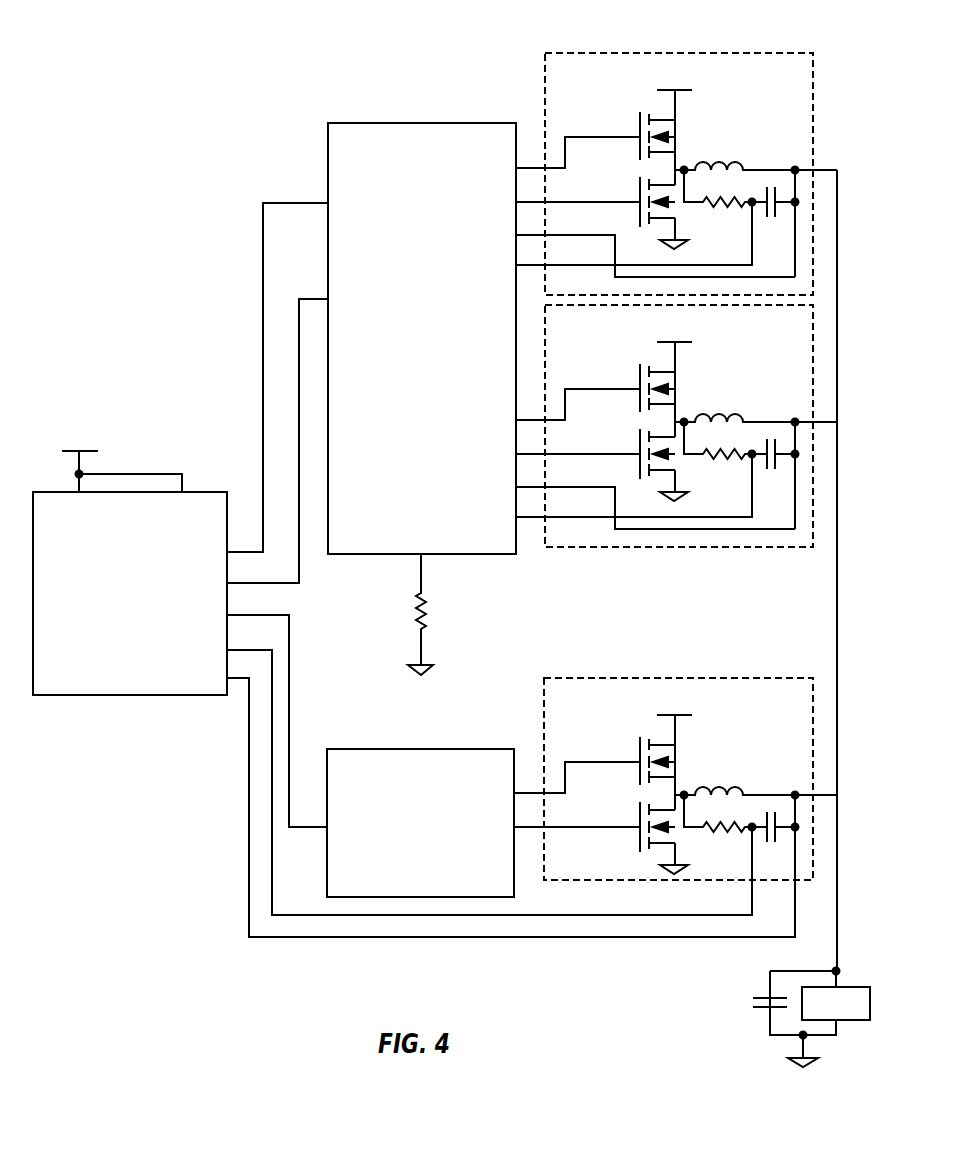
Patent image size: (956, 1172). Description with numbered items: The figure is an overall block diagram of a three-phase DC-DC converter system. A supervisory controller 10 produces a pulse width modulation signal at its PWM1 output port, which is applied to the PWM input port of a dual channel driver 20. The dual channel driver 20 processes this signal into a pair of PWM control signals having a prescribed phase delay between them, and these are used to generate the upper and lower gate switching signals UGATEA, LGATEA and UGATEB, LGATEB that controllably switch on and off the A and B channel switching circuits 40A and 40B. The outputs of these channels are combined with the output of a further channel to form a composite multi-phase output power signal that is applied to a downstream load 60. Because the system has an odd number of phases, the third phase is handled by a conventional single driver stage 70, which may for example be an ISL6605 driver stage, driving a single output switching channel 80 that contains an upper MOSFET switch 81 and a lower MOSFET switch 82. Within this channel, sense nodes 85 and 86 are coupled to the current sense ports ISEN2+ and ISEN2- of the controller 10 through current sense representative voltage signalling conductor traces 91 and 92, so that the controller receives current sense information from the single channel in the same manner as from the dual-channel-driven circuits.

The supervisory controller 10 is at (106, 695).
The dual channel driver 20 is at (400, 123).
The A channel switching circuit 40A is at (747, 52).
The B channel switching circuit 40B is at (662, 546).
The load 60 is at (855, 987).
The single driver stage 70 is at (390, 749).
The single output switching channel 80 is at (675, 755).
The upper MOSFET switch 81 is at (672, 752).
The lower MOSFET switch 82 is at (638, 817).
The sense node 85 is at (795, 790).
The sense node 86 is at (750, 827).
The current sense representative voltage signalling conductor trace 91 is at (565, 937).
The current sense representative voltage signalling conductor trace 92 is at (583, 913).